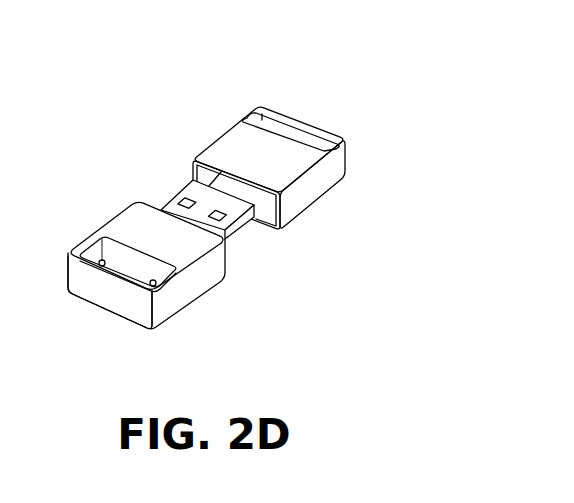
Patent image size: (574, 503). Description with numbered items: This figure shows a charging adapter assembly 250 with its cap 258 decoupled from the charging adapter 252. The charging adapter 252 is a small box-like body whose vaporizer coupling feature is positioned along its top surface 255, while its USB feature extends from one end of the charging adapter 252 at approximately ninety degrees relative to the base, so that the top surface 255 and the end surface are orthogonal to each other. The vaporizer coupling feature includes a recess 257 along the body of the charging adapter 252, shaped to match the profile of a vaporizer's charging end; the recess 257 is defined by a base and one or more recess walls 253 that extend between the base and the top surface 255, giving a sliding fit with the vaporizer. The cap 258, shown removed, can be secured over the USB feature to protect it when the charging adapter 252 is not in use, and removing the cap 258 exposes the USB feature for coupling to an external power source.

The charging adapter assembly 250 is at (290, 258).
The charging adapter 252 is at (191, 296).
The recess walls 253 is at (115, 298).
The top surface 255 is at (143, 233).
The recess 257 is at (129, 261).
The cap 258 is at (212, 105).